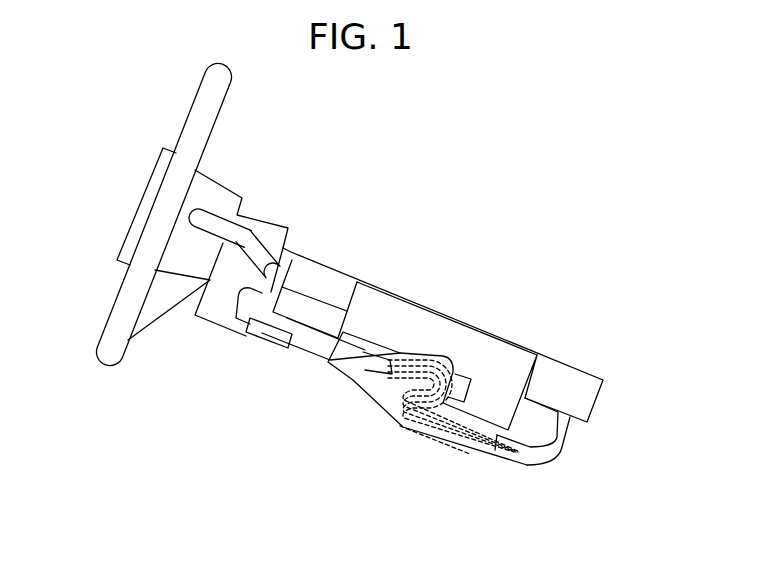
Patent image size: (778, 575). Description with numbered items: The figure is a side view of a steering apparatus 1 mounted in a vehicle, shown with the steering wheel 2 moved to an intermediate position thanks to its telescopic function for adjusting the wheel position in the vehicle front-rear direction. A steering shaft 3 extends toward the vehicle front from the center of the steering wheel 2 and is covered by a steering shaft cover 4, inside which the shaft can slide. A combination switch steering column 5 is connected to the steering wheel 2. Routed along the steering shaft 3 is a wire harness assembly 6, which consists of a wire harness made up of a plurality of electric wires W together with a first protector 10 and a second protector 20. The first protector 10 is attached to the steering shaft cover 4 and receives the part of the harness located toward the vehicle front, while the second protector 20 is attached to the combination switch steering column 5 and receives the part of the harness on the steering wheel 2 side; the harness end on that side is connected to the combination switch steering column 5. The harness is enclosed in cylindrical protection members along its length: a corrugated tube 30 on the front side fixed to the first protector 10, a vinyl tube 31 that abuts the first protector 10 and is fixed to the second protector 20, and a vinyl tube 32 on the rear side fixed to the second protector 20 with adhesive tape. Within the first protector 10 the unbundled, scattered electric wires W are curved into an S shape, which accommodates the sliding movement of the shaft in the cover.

The steering apparatus 1 is at (470, 192).
The steering wheel 2 is at (192, 108).
The steering shaft 3 is at (331, 277).
The steering shaft cover 4 is at (447, 318).
The combination switch steering column 5 is at (215, 308).
The wire harness assembly 6 is at (366, 397).
The first protector 10 is at (447, 352).
The second protector 20 is at (265, 332).
The corrugated tube 30 is at (562, 443).
The vinyl tube 31 is at (300, 347).
The vinyl tube 32 is at (265, 293).
The electric wires W is at (425, 430).